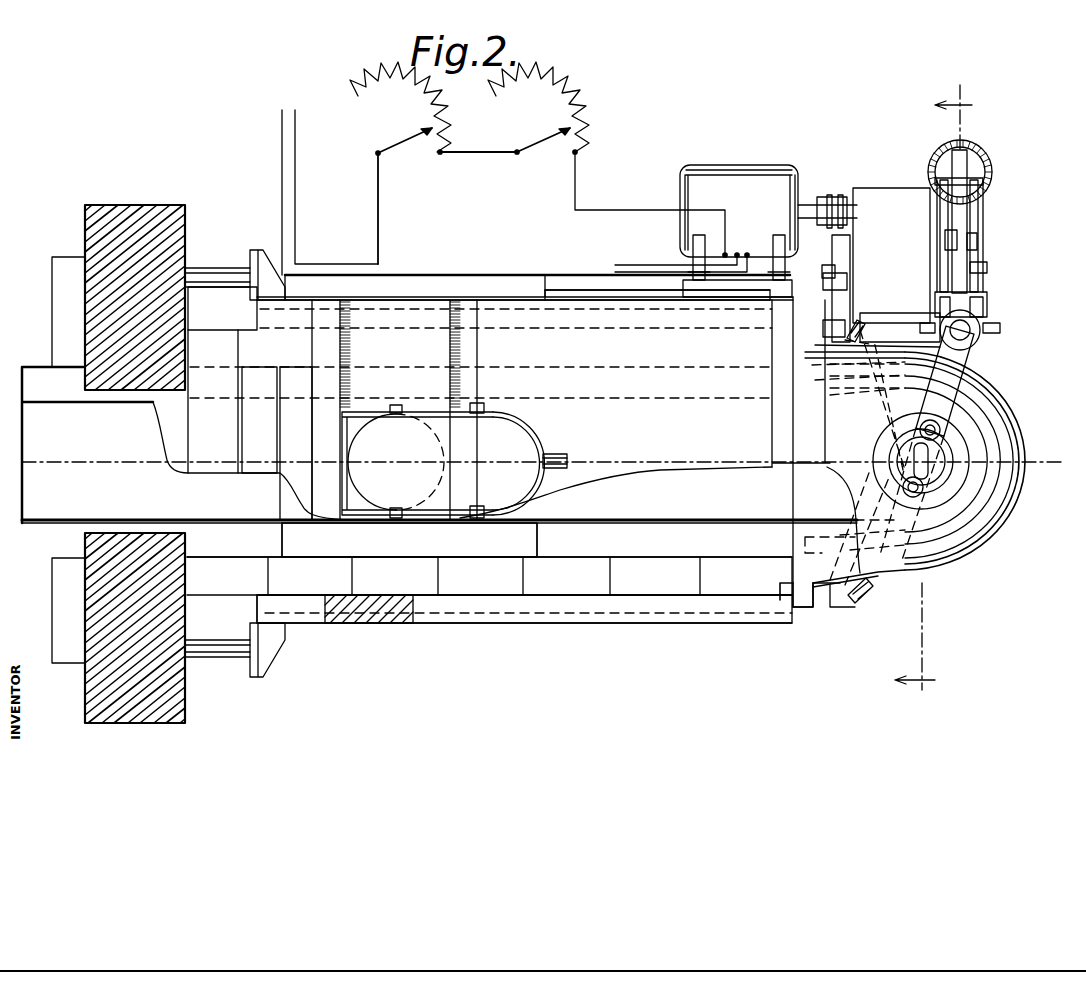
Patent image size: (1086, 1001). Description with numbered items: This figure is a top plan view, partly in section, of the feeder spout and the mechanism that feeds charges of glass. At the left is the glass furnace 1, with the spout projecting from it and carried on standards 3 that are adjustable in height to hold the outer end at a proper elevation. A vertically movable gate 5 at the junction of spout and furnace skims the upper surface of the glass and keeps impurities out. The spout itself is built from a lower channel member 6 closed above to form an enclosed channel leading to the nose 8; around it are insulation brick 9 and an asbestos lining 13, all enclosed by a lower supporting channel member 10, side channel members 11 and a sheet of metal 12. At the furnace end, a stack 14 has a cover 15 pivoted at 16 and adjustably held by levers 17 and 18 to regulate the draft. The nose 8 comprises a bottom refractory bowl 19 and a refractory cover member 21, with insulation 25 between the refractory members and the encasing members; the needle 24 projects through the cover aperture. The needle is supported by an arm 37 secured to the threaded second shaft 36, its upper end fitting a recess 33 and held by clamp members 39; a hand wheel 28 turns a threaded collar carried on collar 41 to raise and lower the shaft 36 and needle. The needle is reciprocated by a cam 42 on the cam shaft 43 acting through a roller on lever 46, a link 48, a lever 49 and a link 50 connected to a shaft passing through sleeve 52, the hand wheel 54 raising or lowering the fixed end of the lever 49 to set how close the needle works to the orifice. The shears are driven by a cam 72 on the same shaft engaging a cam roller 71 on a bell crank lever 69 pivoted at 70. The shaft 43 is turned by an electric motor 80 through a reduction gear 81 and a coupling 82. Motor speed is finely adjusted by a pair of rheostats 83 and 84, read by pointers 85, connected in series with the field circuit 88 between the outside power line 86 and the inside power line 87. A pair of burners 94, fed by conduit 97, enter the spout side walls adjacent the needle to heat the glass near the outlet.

The glass furnace 1 is at (192, 212).
The standards 3 is at (222, 276).
The gate 5 is at (258, 460).
The lower channel member 6 is at (296, 512).
The nose 8 is at (1030, 441).
The insulation brick 9 is at (540, 580).
The lower supporting channel member 10 is at (625, 622).
The side channel members 11 is at (527, 298).
The sheet of metal 12 is at (420, 342).
The asbestos lining 13 is at (393, 625).
The stack 14 is at (350, 425).
The cover 15 is at (373, 412).
The pivot 16 is at (480, 406).
The lever 17 is at (546, 458).
The lever 18 is at (578, 468).
The bottom refractory bowl 19 is at (828, 590).
The refractory cover member 21 is at (960, 540).
The needle 24 is at (895, 570).
The insulation 25 is at (850, 560).
The hand wheel 28 is at (988, 300).
The recess 33 is at (890, 457).
The second shaft 36 is at (972, 348).
The arm 37 is at (955, 388).
The clamp members 39 is at (920, 431).
The collar 41 is at (972, 340).
The cam 42 is at (980, 256).
The cam shaft 43 is at (988, 268).
The lever 46 is at (980, 245).
The link 48 is at (945, 240).
The lever 49 is at (968, 215).
The link 50 is at (937, 162).
The sleeve 52 is at (967, 160).
The hand wheel 54 is at (953, 160).
The bell crank lever 69 is at (815, 347).
The pivot 70 is at (825, 320).
The cam roller 71 is at (823, 283).
The cam 72 is at (842, 250).
The electric motor 80 is at (740, 175).
The reduction gear 81 is at (891, 255).
The coupling 82 is at (828, 195).
The rheostat 83 is at (580, 90).
The rheostat 84 is at (440, 91).
The pointers 85 is at (408, 142).
The power line 86 is at (280, 142).
The power line 87 is at (298, 142).
The field circuit 88 is at (618, 212).
The burners 94 is at (895, 395).
The conduit 97 is at (870, 320).